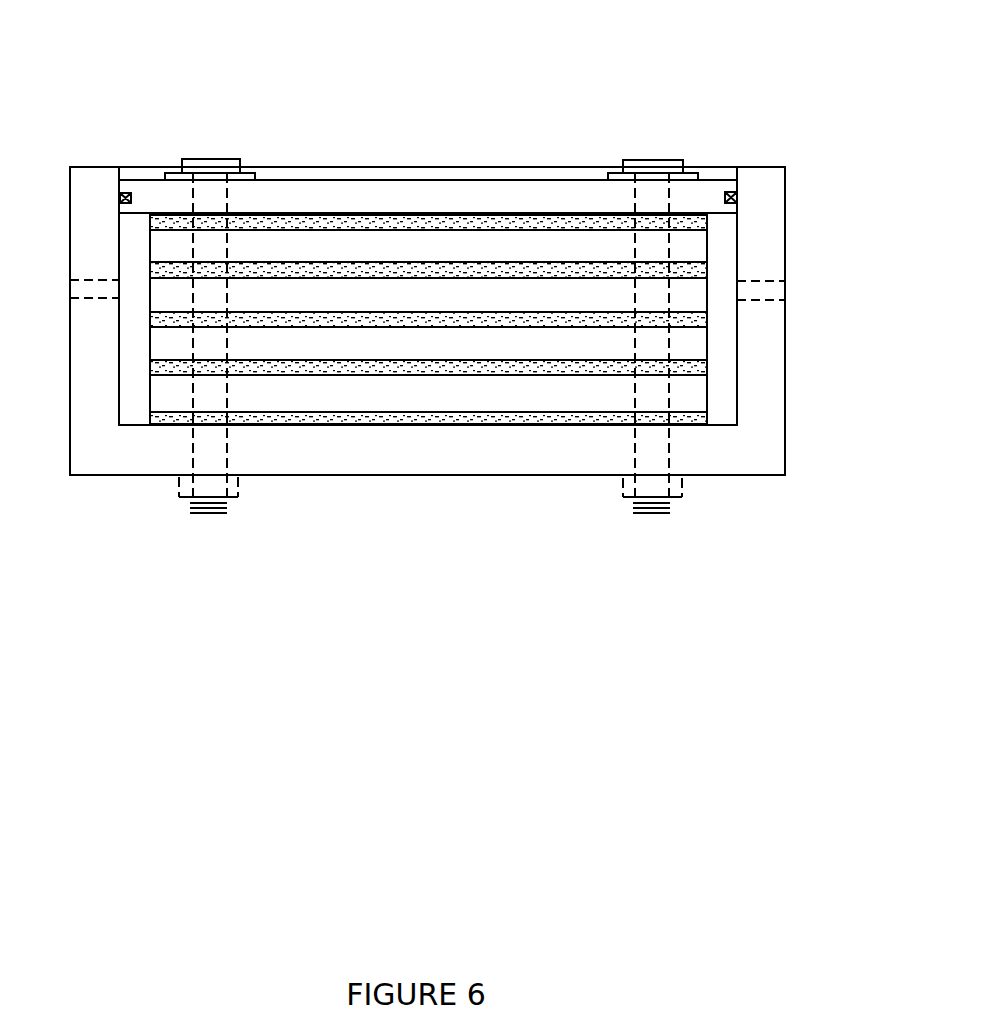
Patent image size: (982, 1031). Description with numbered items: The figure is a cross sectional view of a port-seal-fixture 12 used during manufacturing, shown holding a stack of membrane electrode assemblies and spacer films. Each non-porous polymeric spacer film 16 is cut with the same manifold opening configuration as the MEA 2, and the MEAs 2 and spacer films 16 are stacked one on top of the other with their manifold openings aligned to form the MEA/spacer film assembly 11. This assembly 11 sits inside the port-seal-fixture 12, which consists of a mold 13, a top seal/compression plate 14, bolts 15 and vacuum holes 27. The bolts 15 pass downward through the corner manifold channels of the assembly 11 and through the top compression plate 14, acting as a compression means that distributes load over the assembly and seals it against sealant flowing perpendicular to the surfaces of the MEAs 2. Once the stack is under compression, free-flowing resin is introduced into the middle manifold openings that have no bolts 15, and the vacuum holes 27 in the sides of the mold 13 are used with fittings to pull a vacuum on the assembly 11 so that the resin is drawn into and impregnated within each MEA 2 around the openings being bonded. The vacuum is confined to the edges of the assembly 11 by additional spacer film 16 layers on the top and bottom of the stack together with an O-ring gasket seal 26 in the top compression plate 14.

The MEA 2 is at (310, 250).
The MEA/spacer film assembly 11 is at (280, 433).
The port-seal-fixture 12 is at (779, 526).
The mold 13 is at (105, 455).
The top seal/compression plate 14 is at (397, 193).
The bolts 15 is at (205, 155).
The spacer film 16 is at (340, 217).
The O-ring gasket seal 26 is at (125, 197).
The vacuum holes 27 is at (103, 288).